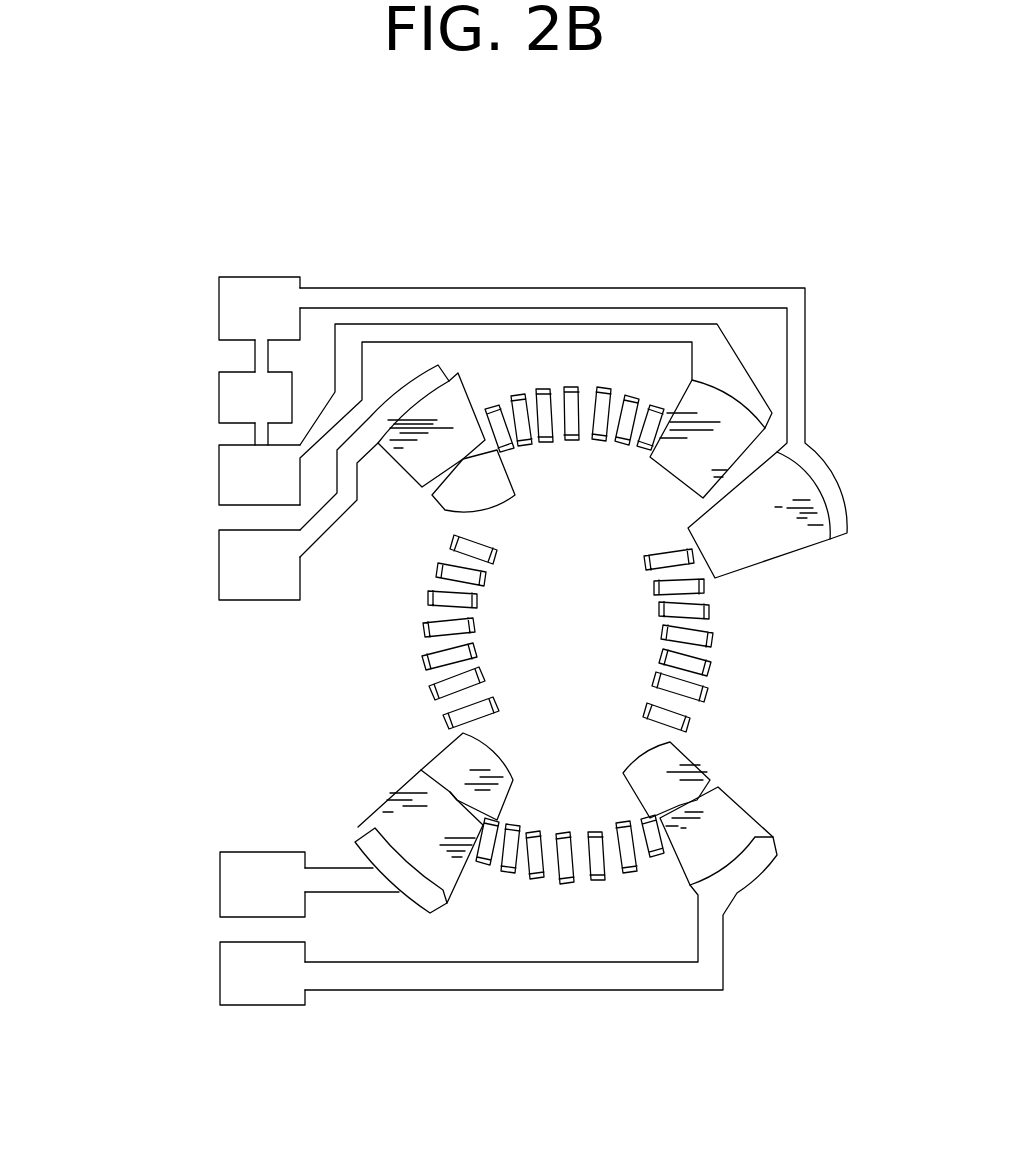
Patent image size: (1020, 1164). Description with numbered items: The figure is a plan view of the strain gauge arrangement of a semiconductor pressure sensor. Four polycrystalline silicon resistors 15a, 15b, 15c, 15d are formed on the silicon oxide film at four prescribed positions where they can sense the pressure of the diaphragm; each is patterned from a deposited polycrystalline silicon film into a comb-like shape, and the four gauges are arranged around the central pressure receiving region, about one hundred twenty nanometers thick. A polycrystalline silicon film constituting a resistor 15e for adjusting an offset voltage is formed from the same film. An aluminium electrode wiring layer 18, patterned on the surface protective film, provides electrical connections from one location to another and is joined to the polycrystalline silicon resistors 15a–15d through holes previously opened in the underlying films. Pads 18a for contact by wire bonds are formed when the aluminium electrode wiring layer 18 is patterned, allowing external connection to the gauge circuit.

The polycrystalline silicon resistor 15a is at (539, 383).
The polycrystalline silicon resistor 15b is at (728, 657).
The polycrystalline silicon resistor 15c is at (406, 668).
The polycrystalline silicon resistor 15d is at (575, 898).
The resistor for adjusting an offset voltage 15e is at (255, 357).
The aluminium electrode wiring layer 18 is at (642, 335).
The pad 18a is at (232, 578).